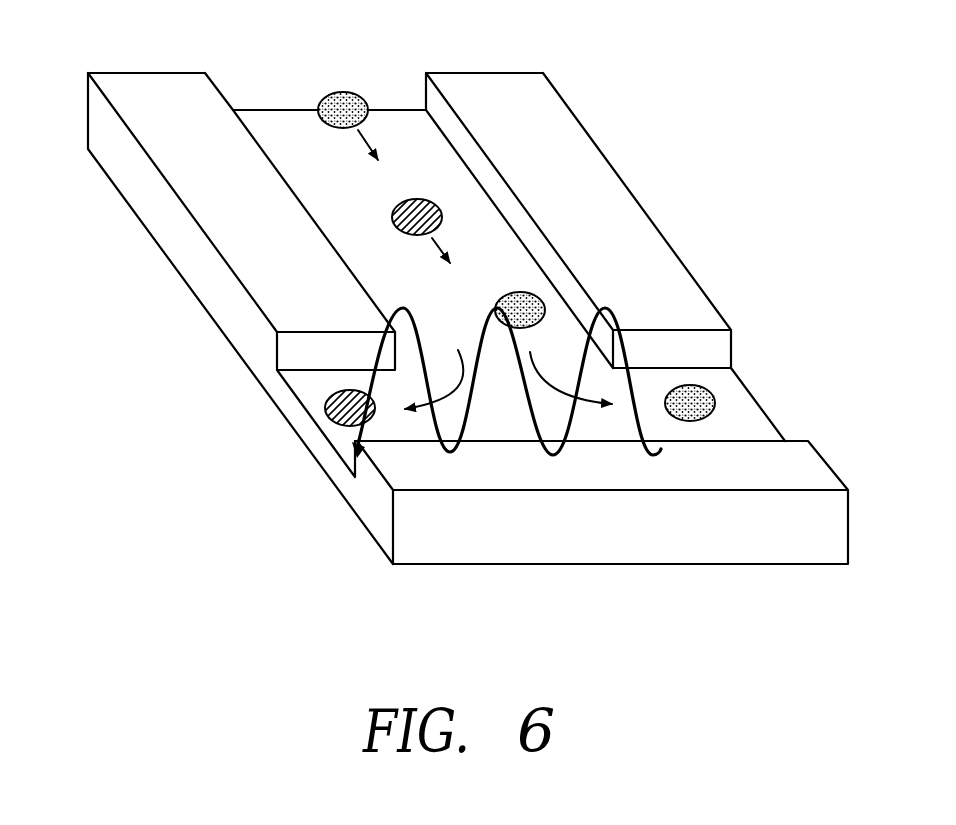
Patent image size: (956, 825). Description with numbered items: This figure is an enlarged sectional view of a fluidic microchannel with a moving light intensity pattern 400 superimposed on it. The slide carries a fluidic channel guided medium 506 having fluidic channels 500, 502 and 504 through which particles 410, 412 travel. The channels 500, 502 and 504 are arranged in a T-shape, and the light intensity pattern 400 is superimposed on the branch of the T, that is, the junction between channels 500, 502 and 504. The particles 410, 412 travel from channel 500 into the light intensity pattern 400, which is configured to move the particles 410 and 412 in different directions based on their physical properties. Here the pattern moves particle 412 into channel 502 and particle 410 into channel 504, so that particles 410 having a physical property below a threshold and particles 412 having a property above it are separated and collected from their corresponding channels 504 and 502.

The moving light intensity pattern 400 is at (613, 308).
The particles 410 is at (350, 90).
The particles 412 is at (437, 203).
The fluidic channel 500 is at (278, 123).
The fluidic channel 502 is at (308, 387).
The fluidic channel 504 is at (752, 425).
The fluidic channel guided medium 506 is at (140, 187).